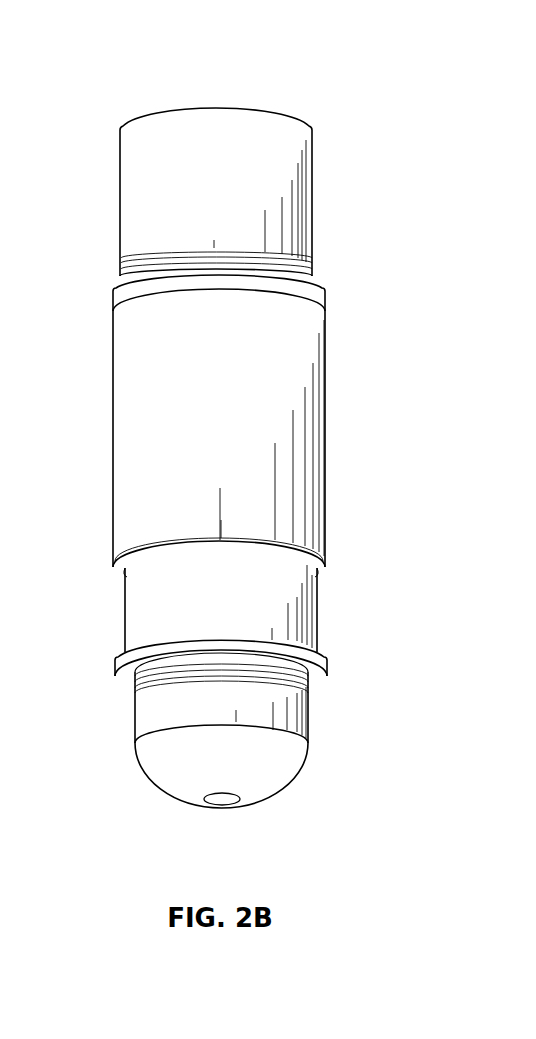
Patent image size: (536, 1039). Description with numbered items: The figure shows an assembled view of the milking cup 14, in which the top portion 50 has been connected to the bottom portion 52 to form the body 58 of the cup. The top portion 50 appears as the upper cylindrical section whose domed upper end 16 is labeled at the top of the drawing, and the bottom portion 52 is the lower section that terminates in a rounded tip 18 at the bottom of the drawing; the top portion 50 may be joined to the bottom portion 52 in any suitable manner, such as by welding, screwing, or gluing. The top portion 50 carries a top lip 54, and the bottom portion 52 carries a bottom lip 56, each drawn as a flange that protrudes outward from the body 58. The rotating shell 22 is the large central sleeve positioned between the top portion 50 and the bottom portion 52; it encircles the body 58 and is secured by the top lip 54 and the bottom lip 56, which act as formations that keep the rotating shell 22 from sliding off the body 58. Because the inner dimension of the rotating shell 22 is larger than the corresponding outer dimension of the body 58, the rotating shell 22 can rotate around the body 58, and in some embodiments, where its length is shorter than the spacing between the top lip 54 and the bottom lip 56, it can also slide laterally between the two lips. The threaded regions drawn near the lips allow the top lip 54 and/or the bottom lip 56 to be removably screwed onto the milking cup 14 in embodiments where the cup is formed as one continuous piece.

The milking cup 14 is at (118, 63).
The top cap 16 is at (214, 102).
The dome tip 18 is at (273, 785).
The rotating shell 22 is at (128, 422).
The top portion 50 is at (138, 210).
The bottom portion 52 is at (143, 620).
The top lip 54 is at (111, 305).
The bottom lip 56 is at (326, 668).
The body 58 is at (307, 615).